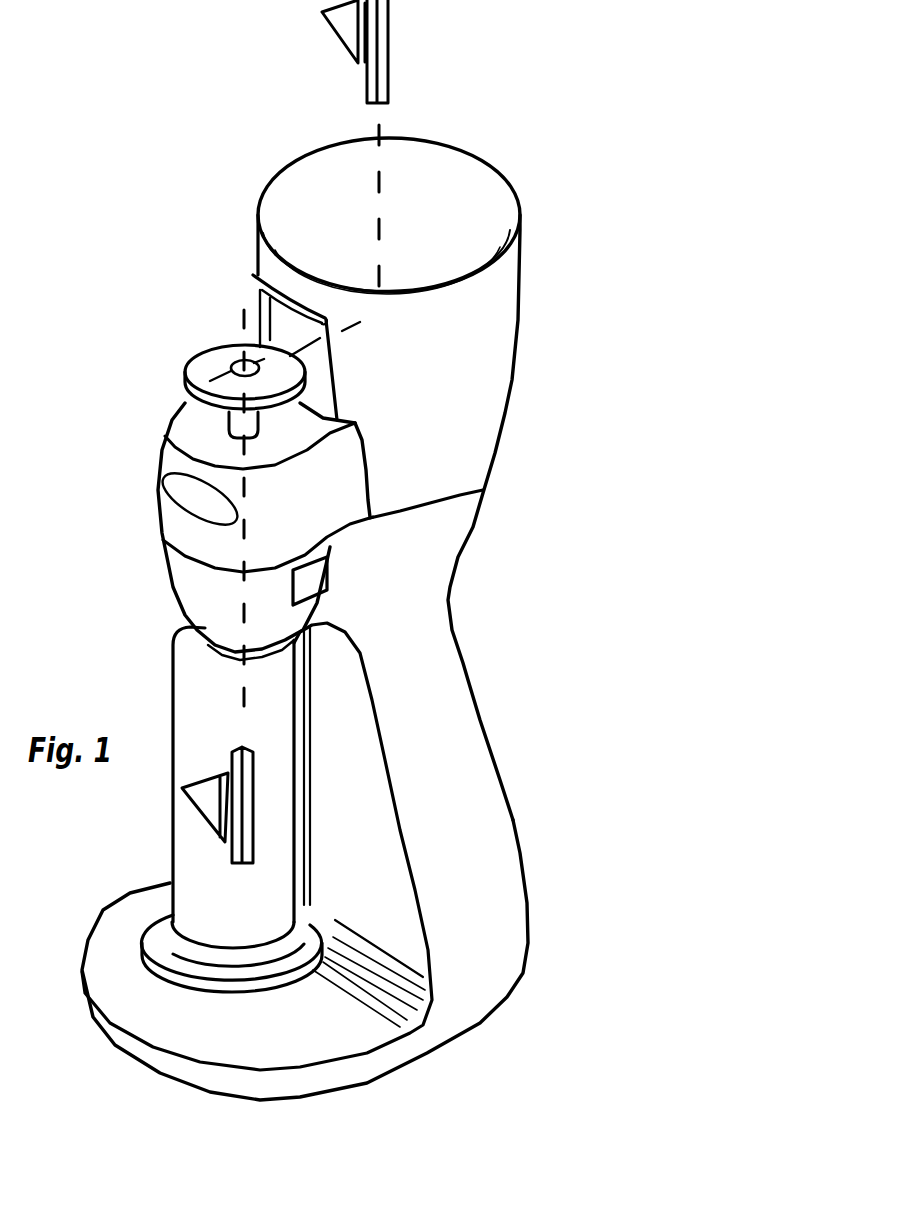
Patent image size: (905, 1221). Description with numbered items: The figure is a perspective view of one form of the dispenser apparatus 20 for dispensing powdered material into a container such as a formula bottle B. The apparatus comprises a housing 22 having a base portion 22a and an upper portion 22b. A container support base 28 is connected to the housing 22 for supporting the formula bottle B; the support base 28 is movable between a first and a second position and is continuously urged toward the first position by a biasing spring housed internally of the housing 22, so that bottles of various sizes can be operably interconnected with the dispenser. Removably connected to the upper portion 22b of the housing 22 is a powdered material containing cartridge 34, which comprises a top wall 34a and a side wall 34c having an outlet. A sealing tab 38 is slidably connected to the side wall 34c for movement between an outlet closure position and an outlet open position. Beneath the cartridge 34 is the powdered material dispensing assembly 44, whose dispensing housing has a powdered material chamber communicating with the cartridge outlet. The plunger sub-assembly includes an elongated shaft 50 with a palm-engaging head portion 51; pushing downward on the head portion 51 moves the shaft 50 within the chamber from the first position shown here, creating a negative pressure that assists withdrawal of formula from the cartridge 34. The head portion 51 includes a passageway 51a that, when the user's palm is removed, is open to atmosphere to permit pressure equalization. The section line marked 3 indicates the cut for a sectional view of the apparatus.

The dispenser apparatus 20 is at (237, 244).
The housing 22 is at (341, 789).
The base portion 22a is at (473, 1027).
The upper portion 22b is at (477, 506).
The container support base 28 is at (132, 957).
The powdered material containing cartridge 34 is at (420, 469).
The top wall 34a is at (463, 177).
The side wall 34c is at (447, 424).
The sealing tab 38 is at (322, 374).
The powdered material dispensing assembly 44 is at (158, 463).
The elongated shaft 50 is at (227, 418).
The palm-engaging head portion 51 is at (223, 359).
The passageway 51a is at (231, 364).
The formula bottle B is at (175, 853).
The section line for FIG. 3 is at (285, 431).